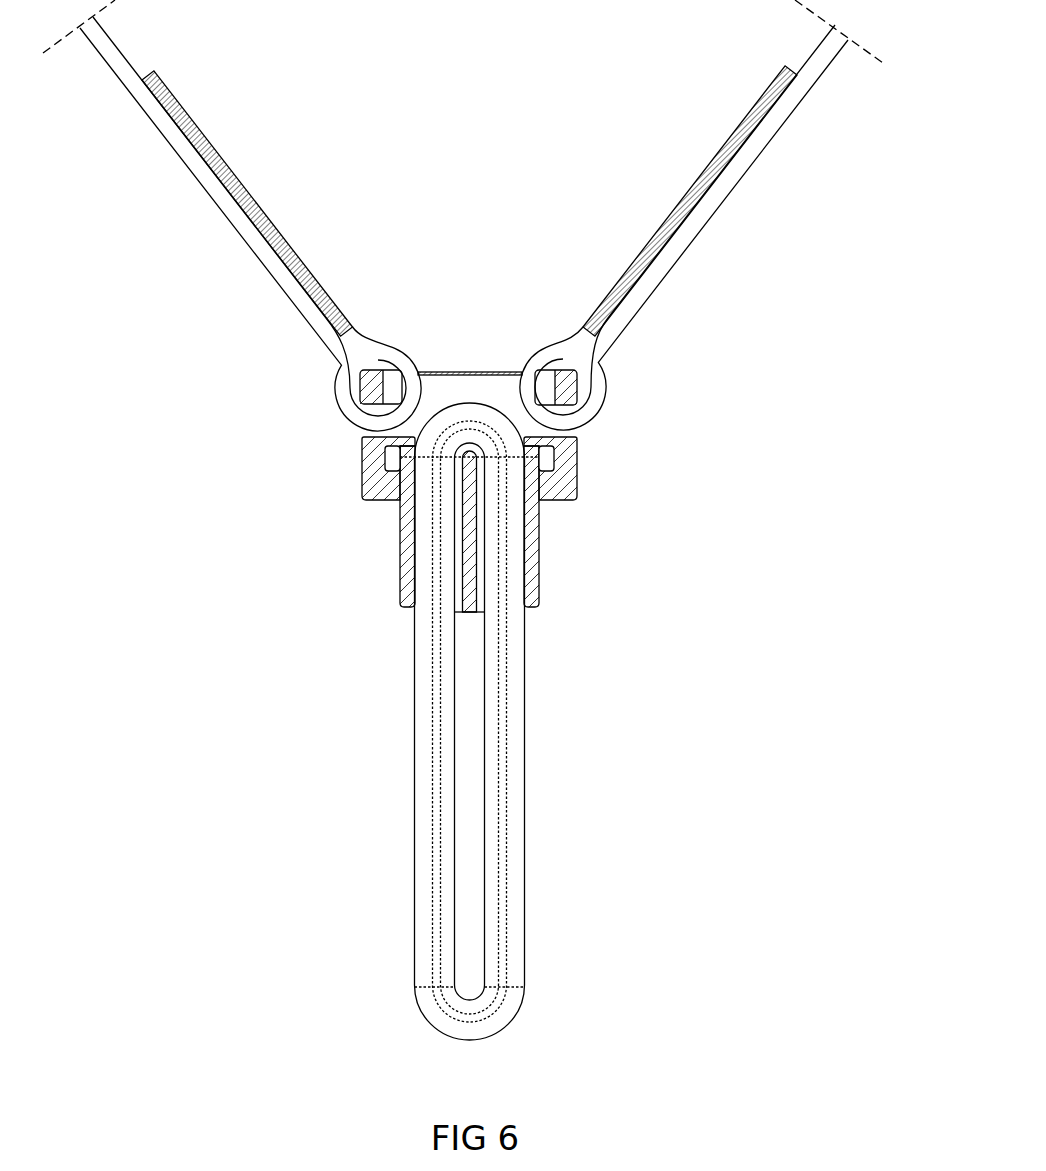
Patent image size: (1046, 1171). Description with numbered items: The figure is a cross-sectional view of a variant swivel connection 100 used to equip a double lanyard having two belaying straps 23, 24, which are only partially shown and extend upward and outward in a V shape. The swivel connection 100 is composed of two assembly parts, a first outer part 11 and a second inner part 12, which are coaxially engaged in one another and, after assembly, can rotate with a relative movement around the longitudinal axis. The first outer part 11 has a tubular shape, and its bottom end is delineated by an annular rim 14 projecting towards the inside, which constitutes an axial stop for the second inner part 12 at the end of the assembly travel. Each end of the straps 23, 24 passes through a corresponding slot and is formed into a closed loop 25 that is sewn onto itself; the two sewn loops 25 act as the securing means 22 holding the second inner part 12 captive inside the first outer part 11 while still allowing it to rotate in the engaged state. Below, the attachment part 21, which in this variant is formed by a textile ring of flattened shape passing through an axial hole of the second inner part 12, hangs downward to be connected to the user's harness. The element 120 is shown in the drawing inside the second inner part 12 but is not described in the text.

The swivel connection 100 is at (283, 612).
The first outer part 11 is at (545, 482).
The second inner part 12 is at (418, 526).
The annular rim 14 is at (380, 482).
The inner pin 120 is at (408, 721).
The attachment part 21 is at (515, 732).
The securing means 22 is at (653, 380).
The belaying strap 23 is at (232, 215).
The belaying strap 24 is at (706, 215).
The closed loop 25 is at (378, 358).